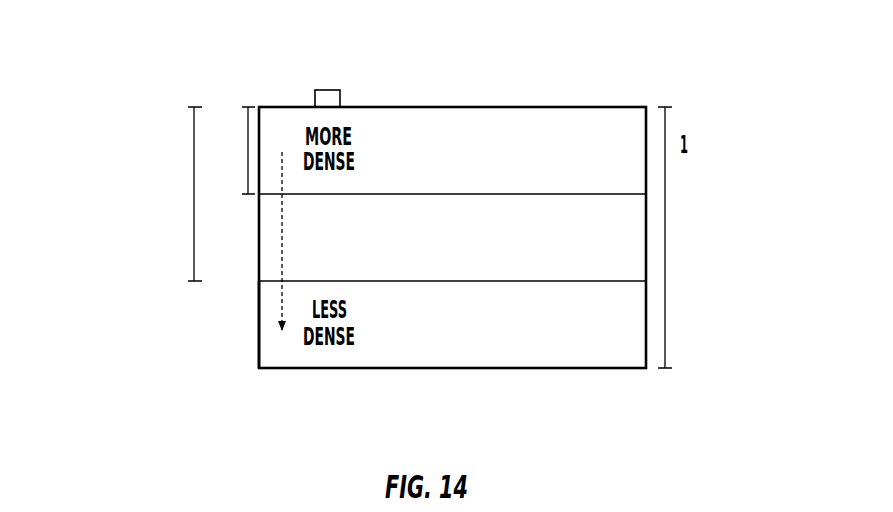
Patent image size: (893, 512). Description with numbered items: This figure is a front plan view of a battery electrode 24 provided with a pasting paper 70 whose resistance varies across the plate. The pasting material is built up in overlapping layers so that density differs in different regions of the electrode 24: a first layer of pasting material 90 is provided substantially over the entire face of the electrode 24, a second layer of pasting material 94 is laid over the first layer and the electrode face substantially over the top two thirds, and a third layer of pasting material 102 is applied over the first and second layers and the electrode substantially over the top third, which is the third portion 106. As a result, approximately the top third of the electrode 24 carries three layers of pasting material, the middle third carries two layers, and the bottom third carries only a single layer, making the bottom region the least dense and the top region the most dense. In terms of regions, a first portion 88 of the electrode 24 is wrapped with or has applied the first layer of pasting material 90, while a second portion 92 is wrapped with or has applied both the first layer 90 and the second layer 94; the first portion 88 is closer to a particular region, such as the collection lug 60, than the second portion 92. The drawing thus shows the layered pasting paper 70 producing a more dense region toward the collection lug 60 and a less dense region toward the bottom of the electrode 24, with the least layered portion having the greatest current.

The pasting paper 70 is at (143, 67).
The third portion 106 is at (247, 122).
The collection lug 60 is at (327, 90).
The second layer of pasting material 94 is at (510, 213).
The third layer of pasting material 102 is at (615, 152).
The first portion 88 is at (665, 240).
The second portion 92 is at (194, 178).
The battery electrode 24 is at (258, 308).
The first layer of pasting material 90 is at (483, 325).